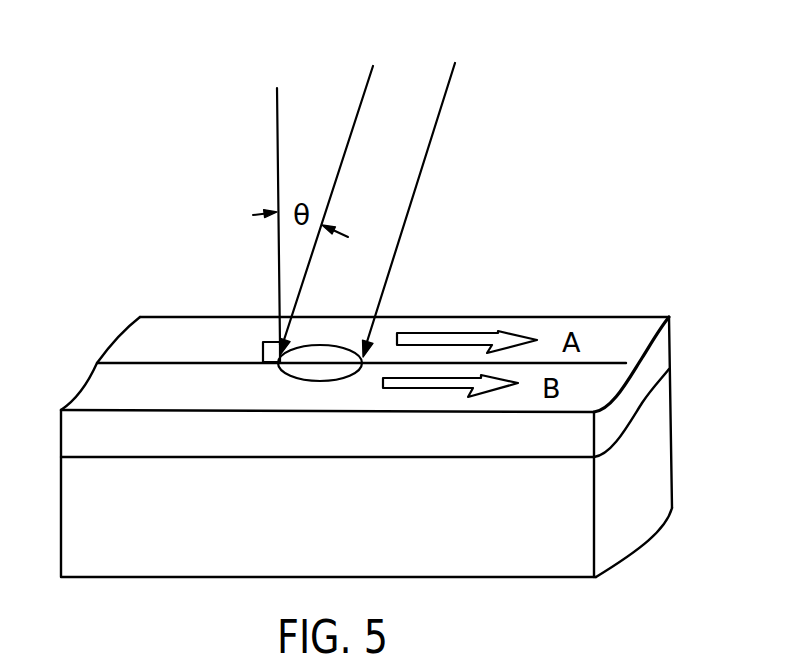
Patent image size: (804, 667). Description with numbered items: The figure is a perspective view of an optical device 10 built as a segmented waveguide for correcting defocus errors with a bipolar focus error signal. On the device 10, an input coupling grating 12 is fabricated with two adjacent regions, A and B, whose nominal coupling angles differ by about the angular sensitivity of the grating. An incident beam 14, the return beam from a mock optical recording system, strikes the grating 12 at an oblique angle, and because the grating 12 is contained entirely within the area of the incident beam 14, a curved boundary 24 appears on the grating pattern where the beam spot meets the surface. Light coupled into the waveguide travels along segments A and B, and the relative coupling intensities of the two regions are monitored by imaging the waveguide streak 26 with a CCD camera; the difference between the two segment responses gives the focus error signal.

The optical device 10 is at (606, 238).
The input coupling grating 12 is at (273, 341).
The incident beam 14 is at (412, 74).
The curved boundary 24 is at (287, 376).
The waveguide streak 26 is at (441, 396).